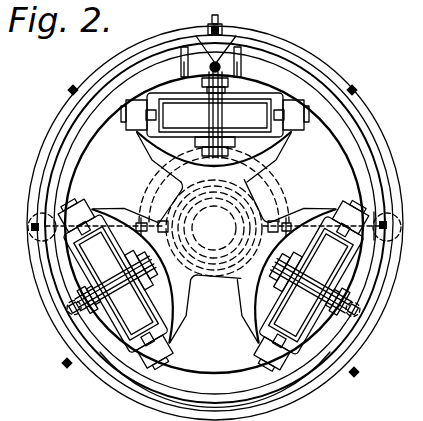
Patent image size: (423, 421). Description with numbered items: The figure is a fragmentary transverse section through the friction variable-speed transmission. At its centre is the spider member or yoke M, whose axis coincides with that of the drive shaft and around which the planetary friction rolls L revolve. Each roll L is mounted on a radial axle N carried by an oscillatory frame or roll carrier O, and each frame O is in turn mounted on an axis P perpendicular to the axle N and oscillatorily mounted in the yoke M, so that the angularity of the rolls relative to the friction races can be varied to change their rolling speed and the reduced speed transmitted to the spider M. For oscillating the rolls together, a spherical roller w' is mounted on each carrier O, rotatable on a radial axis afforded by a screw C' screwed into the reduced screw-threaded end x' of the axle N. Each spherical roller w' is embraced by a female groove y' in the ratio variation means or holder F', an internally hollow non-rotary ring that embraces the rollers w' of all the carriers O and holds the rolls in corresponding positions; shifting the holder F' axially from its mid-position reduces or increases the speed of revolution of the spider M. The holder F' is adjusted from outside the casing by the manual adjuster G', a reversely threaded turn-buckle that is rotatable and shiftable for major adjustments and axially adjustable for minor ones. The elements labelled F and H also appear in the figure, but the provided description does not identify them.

The frame ring F is at (225, 223).
The ratio variation holder F' is at (215, 229).
The manual adjuster G' is at (397, 215).
The hub H is at (257, 203).
The planetary friction roll L is at (215, 115).
The radial axle N is at (215, 115).
The spider member M is at (262, 186).
The oscillatory frame O is at (236, 163).
The frame axis P is at (295, 131).
The spherical roller w' is at (195, 50).
The screw C' is at (234, 52).
The reduced screw threaded end x' is at (158, 55).
The female groove y' is at (256, 54).